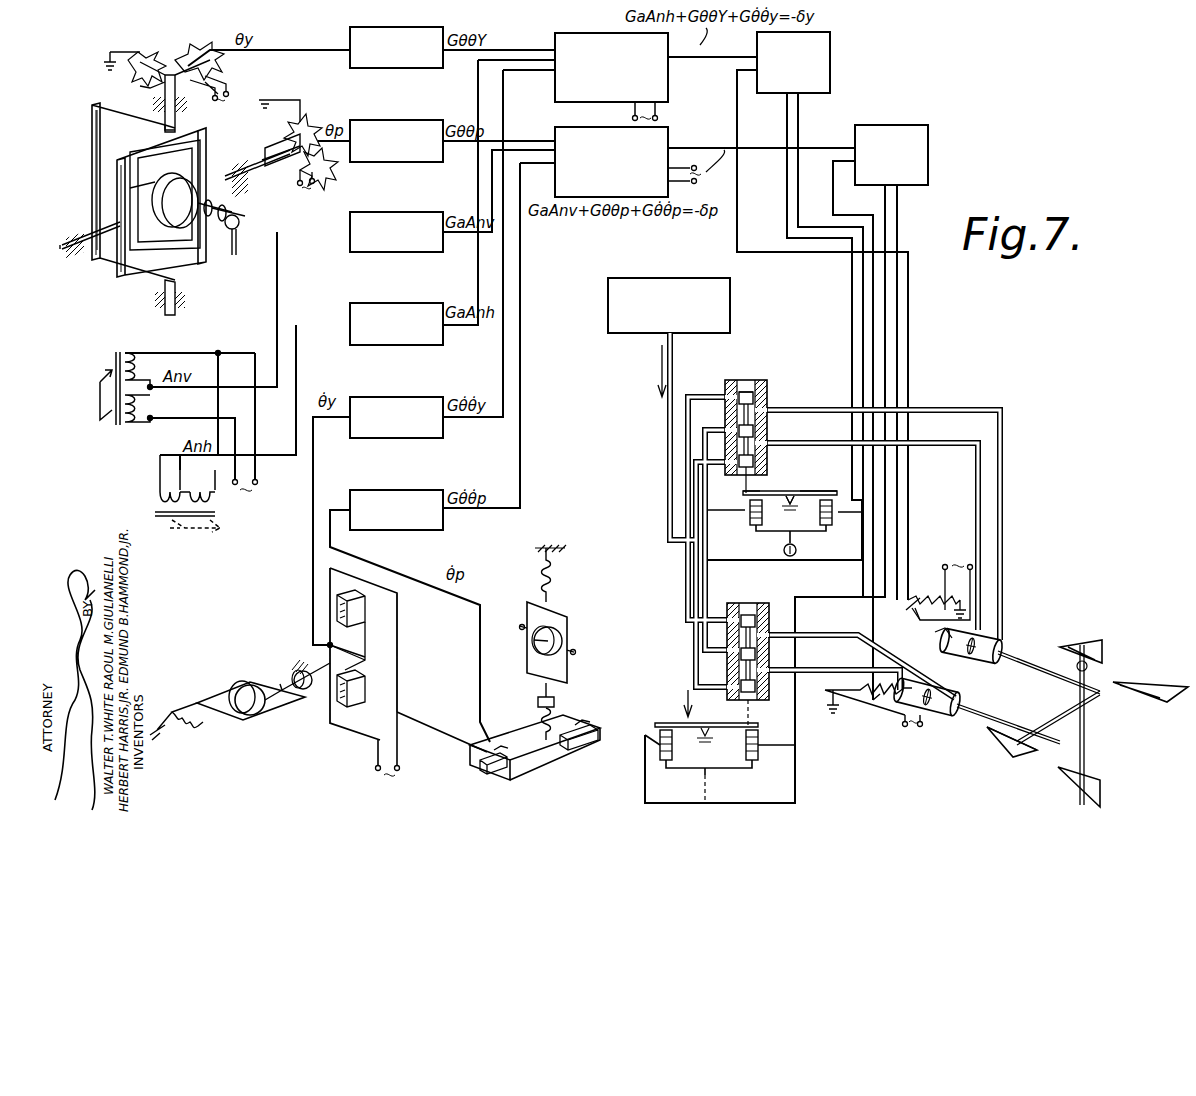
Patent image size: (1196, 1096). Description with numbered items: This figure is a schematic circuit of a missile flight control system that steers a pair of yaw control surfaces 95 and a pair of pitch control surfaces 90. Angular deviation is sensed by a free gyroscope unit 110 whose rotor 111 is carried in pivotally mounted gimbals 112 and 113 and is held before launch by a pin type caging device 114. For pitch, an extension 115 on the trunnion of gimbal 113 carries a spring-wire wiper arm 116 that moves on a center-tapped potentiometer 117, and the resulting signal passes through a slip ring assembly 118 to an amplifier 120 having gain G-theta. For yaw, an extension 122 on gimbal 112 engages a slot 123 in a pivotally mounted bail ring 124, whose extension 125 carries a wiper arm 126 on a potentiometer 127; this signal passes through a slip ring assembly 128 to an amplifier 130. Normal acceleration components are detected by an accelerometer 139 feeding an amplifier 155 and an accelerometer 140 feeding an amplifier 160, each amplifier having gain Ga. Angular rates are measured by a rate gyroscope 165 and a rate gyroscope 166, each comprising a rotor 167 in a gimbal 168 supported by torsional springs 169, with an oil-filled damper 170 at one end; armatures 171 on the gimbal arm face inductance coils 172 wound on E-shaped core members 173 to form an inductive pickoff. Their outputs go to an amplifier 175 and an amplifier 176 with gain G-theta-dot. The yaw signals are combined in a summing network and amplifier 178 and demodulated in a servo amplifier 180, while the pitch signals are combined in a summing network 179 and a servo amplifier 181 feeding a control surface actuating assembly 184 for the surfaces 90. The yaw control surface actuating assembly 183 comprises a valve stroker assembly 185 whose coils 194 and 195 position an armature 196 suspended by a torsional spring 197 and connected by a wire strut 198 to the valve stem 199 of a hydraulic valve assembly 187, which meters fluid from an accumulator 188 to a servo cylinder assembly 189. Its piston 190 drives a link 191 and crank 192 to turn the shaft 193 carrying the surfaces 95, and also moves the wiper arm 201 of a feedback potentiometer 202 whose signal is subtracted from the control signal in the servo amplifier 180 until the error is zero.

The pitch control surfaces 90 is at (1168, 683).
The yaw control surfaces 95 is at (1105, 640).
The free gyroscope unit 110 is at (83, 295).
The rotor 111 is at (178, 245).
The gimbal 112 is at (205, 250).
The gimbal 113 is at (208, 148).
The pin type caging device 114 is at (240, 220).
The extension 115 is at (262, 148).
The wiper arm 116 is at (306, 128).
The potentiometer 117 is at (318, 172).
The slip ring assembly 118 is at (262, 170).
The amplifier 120 is at (398, 120).
The extension 122 is at (88, 175).
The slot 123 is at (90, 200).
The bail ring 124 is at (110, 118).
The extension 125 is at (178, 122).
The wiper arm 126 is at (162, 65).
The potentiometer 127 is at (218, 62).
The slip ring assembly 128 is at (158, 90).
The amplifier 130 is at (350, 36).
The accelerometer 139 is at (170, 358).
The accelerometer 140 is at (160, 478).
The amplifier 155 is at (402, 212).
The amplifier 160 is at (400, 303).
The rate gyroscope 165 is at (528, 614).
The rate gyroscope 166 is at (270, 743).
The rotor 167 is at (530, 658).
The gimbal 168 is at (570, 625).
The torsional springs 169 is at (552, 578).
The oil-filled damper 170 is at (538, 700).
The armatures 171 is at (520, 762).
The inductance coil 172 is at (588, 720).
The E-shaped core member 173 is at (588, 728).
The amplifier 175 is at (400, 490).
The amplifier 176 is at (400, 397).
The summing network and amplifier 178 is at (585, 33).
The summing network 179 is at (582, 127).
The servo amplifier 180 is at (830, 62).
The servo amplifier 181 is at (928, 155).
The control surface actuating assembly 183 is at (820, 398).
The control surface actuating assembly 184 is at (766, 593).
The valve stroker assembly 185 is at (806, 526).
The hydraulic valve assembly 187 is at (767, 383).
The accumulator 188 is at (655, 278).
The servo cylinder assembly 189 is at (1000, 645).
The piston 190 is at (972, 662).
The link 191 is at (1040, 672).
The crank 192 is at (1098, 700).
The shaft 193 is at (1086, 745).
The coil 194 is at (745, 515).
The coil 195 is at (832, 512).
The armature 196 is at (826, 490).
The torsional spring 197 is at (812, 482).
The wire strut 198 is at (745, 490).
The valve stem 199 is at (748, 390).
The wiper arm 201 is at (930, 630).
The feedback potentiometer 202 is at (930, 575).